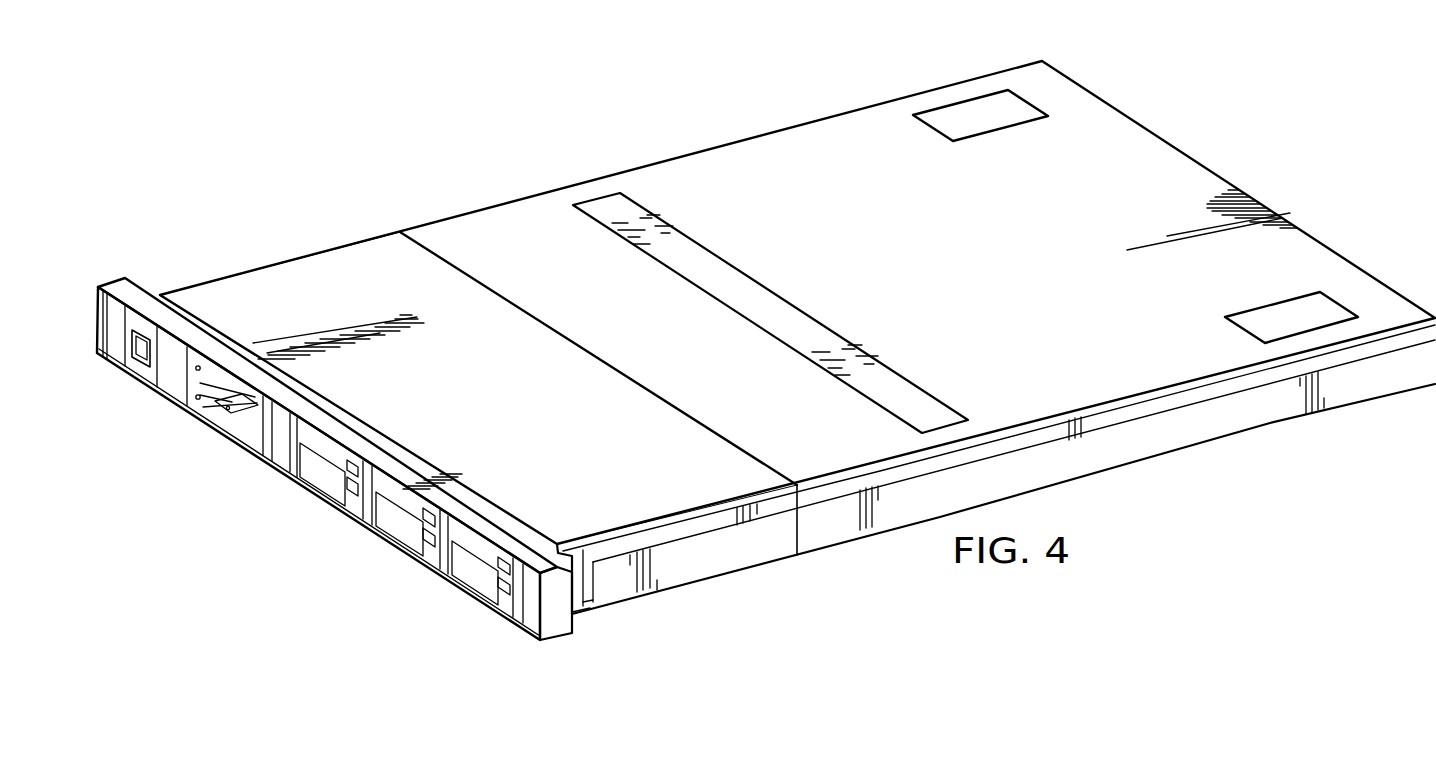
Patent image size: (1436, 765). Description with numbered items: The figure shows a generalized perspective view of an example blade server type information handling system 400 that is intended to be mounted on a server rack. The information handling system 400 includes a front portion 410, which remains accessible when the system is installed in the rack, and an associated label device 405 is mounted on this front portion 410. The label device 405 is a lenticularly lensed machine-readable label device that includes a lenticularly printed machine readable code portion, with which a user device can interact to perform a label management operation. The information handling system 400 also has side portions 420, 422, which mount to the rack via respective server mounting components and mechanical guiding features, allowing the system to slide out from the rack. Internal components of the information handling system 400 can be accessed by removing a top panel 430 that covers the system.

The blade server type information handling system 400 is at (360, 118).
The label device 405 is at (144, 348).
The front portion 410 is at (393, 452).
The side portion 420 is at (1177, 446).
The side portion 422 is at (490, 206).
The top panel 430 is at (253, 282).